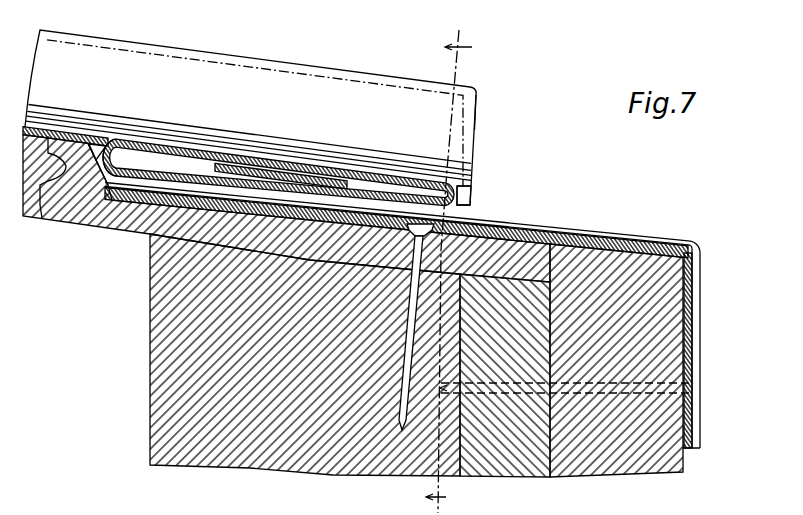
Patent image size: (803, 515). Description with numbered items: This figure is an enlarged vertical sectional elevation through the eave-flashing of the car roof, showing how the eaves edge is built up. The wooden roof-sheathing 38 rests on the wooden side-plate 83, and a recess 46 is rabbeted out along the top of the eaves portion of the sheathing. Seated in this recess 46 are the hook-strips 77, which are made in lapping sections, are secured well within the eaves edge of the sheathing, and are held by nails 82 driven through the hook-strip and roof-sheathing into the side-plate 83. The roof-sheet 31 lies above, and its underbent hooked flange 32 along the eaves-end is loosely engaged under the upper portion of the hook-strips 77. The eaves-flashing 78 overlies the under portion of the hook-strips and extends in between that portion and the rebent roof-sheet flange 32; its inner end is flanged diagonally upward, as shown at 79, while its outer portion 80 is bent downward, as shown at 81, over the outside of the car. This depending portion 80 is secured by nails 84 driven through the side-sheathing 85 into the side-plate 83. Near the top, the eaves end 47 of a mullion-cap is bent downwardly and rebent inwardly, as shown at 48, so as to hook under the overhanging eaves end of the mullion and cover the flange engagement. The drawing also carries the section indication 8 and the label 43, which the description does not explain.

The slide bar 43 is at (264, 77).
The eaves end of mullion-cap 47 is at (493, 129).
The inwardly rebent portion of mullion-cap eaves end 48 is at (407, 147).
The roof-sheathing 38 is at (76, 198).
The recess 46 is at (100, 152).
The hook-strip 77 is at (108, 186).
The roof-sheet 31 is at (187, 146).
The diagonally upward flange of eaves-flashing 79 is at (124, 160).
The underbent hooked flange 32 is at (289, 166).
The nails 84 is at (700, 387).
The eaves-flashing 78 is at (590, 220).
The downward bend of eaves-flashing 81 is at (699, 245).
The outer depending portion of eaves-flashing 80 is at (705, 313).
The side-plate 83 is at (160, 344).
The side-sheathing 85 is at (625, 443).
The nails 82 is at (402, 390).
The section line 8- 8 is at (452, 267).